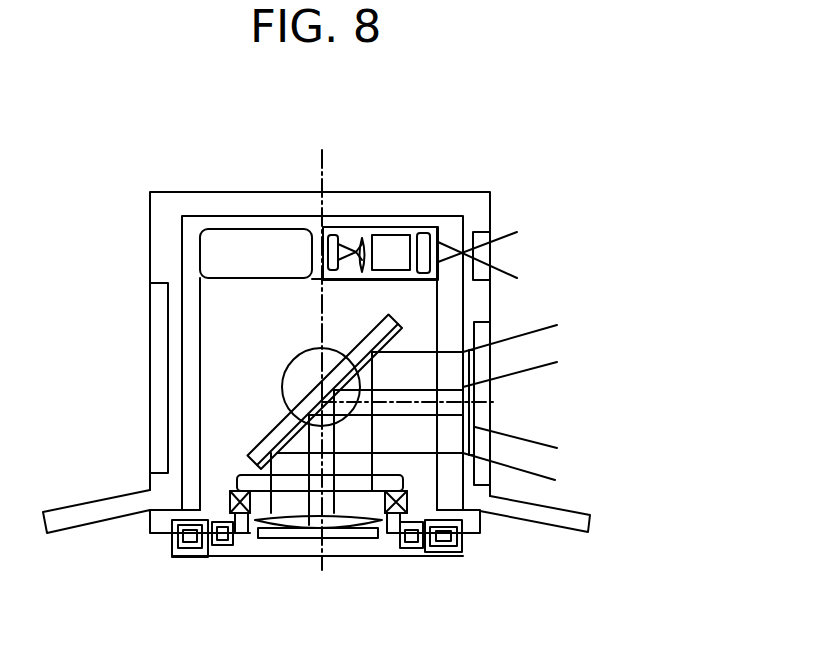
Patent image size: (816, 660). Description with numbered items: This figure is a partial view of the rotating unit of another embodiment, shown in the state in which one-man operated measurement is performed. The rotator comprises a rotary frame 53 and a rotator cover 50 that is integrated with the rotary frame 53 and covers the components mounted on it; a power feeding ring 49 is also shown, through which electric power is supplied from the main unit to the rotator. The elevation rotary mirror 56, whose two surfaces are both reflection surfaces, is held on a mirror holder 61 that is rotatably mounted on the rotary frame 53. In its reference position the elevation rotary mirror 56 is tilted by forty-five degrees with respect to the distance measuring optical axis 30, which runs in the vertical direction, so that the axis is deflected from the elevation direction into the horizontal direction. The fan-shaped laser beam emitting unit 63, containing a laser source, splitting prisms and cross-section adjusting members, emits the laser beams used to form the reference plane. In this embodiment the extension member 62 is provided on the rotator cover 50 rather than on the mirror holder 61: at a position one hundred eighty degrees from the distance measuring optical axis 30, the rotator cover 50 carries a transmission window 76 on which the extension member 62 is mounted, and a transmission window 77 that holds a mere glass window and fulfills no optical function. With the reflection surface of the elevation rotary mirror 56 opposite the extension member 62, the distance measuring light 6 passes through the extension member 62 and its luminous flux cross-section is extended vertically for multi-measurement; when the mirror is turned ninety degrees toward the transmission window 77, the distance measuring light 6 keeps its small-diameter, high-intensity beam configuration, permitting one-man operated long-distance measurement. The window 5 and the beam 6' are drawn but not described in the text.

The light emission window 5 is at (507, 235).
The distance measuring light 6 is at (579, 421).
The reflected light beam from near object 6' is at (569, 302).
The distance measuring optical axis 30 is at (322, 185).
The power feeding ring 49 is at (163, 547).
The rotator cover 50 is at (450, 192).
The rotary frame 53 is at (468, 548).
The elevation rotary mirror 56 is at (355, 330).
The mirror holder 61 is at (281, 440).
The extension member 62 is at (474, 370).
The fan-shaped laser beam emitting unit 63 is at (380, 227).
The transmission window 76 is at (478, 473).
The transmission window 77 is at (157, 330).